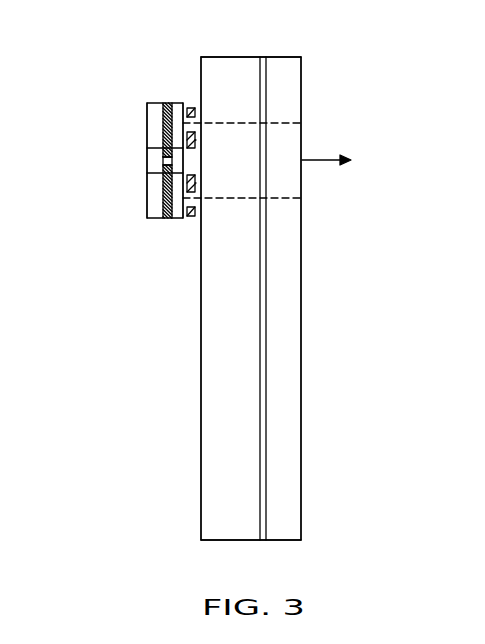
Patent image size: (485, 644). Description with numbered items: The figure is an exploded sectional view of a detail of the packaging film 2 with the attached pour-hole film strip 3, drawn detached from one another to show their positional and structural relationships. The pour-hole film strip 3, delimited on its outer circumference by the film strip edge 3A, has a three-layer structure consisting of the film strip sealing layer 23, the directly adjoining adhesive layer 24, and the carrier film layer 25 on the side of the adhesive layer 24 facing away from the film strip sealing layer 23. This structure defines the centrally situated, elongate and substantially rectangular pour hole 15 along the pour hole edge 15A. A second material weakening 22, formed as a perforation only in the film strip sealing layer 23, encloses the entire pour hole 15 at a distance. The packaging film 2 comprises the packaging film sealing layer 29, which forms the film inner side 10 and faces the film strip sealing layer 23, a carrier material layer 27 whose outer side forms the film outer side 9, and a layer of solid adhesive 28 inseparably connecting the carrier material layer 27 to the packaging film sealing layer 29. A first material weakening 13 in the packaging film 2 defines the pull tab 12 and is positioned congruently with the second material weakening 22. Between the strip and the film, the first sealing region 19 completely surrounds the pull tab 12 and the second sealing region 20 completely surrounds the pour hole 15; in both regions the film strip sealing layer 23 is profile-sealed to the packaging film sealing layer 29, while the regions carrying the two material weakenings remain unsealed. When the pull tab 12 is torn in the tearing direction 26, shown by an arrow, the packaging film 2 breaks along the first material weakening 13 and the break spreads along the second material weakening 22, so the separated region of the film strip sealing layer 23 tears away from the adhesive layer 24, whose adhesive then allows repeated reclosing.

The packaging film 2 is at (290, 53).
The pour-hole film strip 3 is at (142, 221).
The film strip edge 3A is at (152, 103).
The film outer side 9 is at (308, 431).
The film inner side 10 is at (196, 492).
The pull tab 12 is at (310, 140).
The first material weakening 13 is at (285, 123).
The pour hole 15 is at (150, 152).
The pour hole edge 15A is at (160, 165).
The first sealing region 19 is at (196, 110).
The second sealing region 20 is at (196, 182).
The second material weakening 22 is at (172, 103).
The film strip sealing layer 23 is at (191, 108).
The adhesive layer 24 is at (165, 103).
The carrier film layer 25 is at (148, 122).
The tearing direction 26 is at (318, 161).
The carrier material layer 27 is at (292, 505).
The solid adhesive 28 is at (263, 540).
The packaging film sealing layer 29 is at (205, 518).